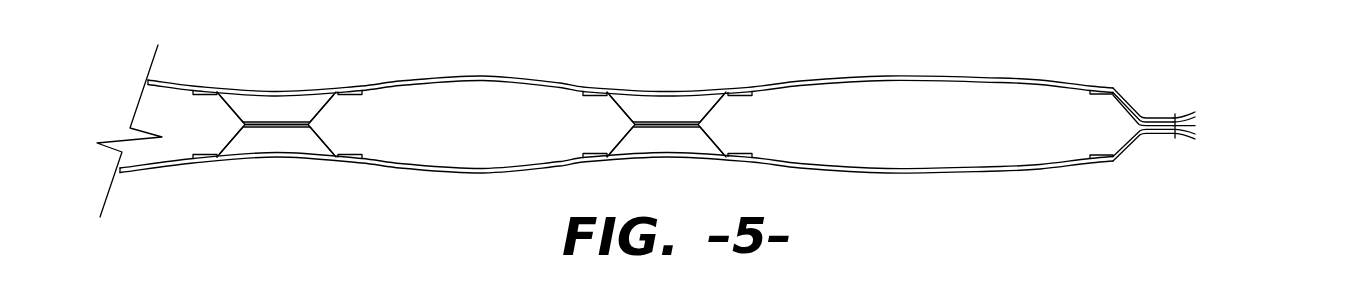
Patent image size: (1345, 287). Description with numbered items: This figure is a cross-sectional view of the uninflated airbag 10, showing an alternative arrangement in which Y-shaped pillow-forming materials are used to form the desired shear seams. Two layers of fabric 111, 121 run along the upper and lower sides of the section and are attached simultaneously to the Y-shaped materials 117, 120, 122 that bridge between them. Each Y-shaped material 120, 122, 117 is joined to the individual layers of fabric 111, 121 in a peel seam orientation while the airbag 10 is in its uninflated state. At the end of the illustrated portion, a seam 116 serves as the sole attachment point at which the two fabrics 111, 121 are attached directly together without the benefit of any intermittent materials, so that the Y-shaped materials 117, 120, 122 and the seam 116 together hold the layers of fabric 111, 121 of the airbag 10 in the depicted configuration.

The airbag 10 is at (1250, 27).
The layer of fabric 111 is at (443, 77).
The layer of fabric 121 is at (438, 172).
The Y-shaped material 120 is at (198, 95).
The Y-shaped material 122 is at (354, 96).
The Y-shaped material 117 is at (1097, 95).
The seam 116 is at (1173, 117).